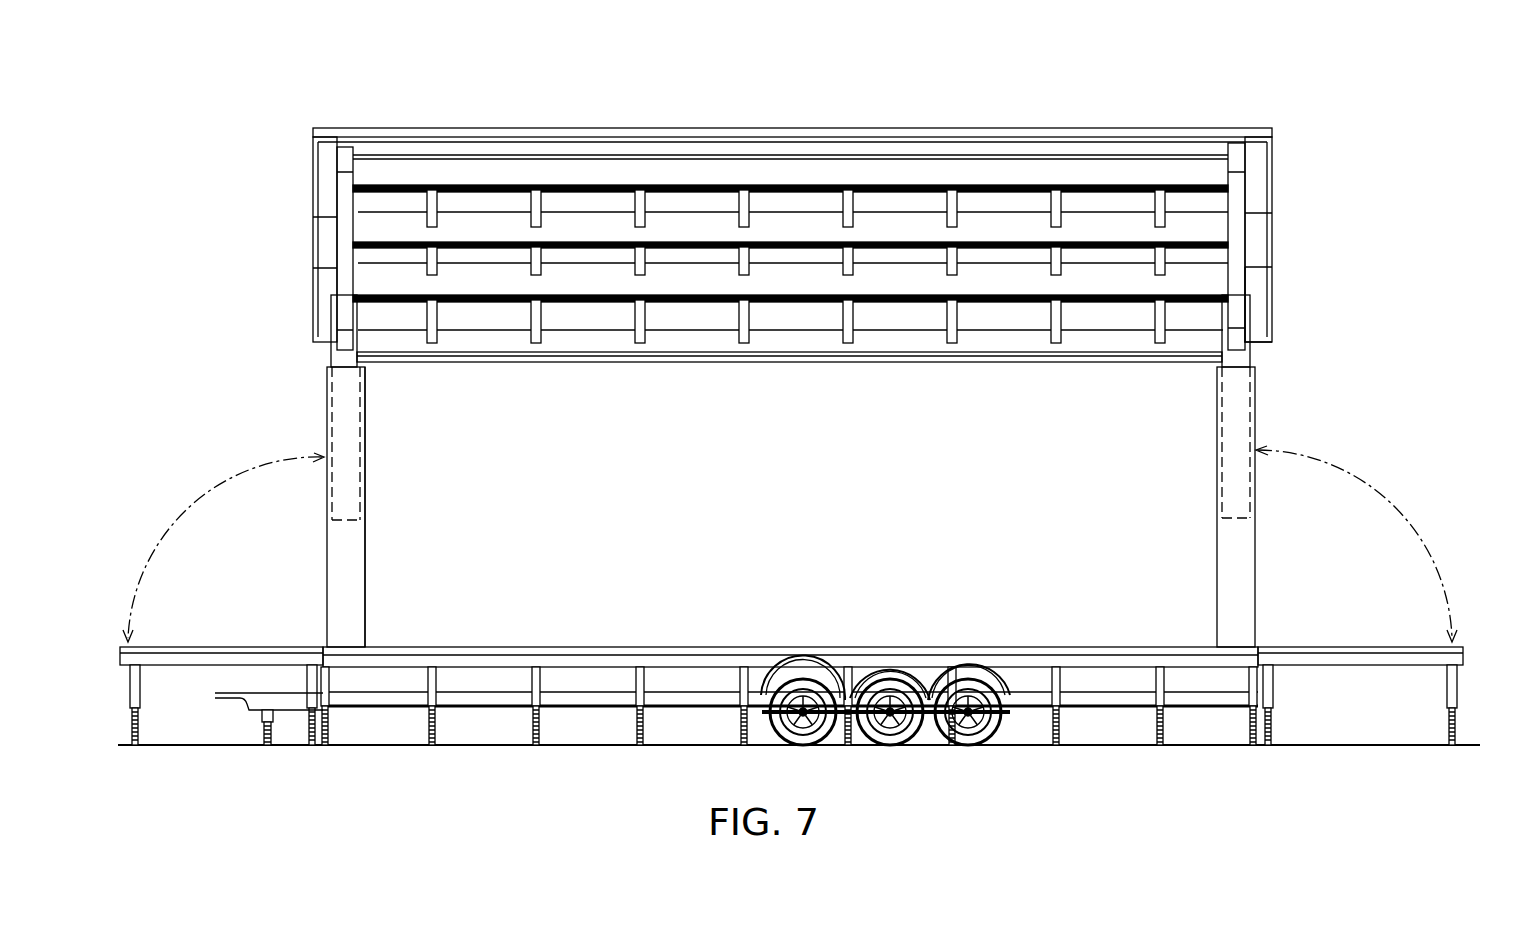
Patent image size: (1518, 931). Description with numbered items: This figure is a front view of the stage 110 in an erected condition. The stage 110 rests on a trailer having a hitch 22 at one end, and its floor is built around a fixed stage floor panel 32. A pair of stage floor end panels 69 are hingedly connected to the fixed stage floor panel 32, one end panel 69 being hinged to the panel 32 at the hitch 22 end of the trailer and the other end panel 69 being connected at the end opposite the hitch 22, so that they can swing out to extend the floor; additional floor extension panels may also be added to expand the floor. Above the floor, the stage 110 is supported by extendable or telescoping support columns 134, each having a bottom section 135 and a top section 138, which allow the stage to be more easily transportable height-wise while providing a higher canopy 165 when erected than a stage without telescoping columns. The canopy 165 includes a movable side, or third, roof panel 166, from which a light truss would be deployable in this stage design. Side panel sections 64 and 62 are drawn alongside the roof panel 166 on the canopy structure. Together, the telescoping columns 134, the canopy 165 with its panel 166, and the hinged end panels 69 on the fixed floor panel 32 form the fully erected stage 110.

The stage 110 is at (403, 109).
The canopy 165 is at (284, 190).
The movable side/third roof panel 166 is at (1272, 172).
The middle panel section 64 is at (1272, 240).
The lower panel section 62 is at (1272, 310).
The top section 138 is at (331, 350).
The telescoping support column 134 is at (380, 535).
The bottom section 135 is at (365, 602).
The fixed stage floor panel 32 is at (488, 648).
The stage floor end panel 69 is at (143, 648).
The hitch 22 is at (243, 702).